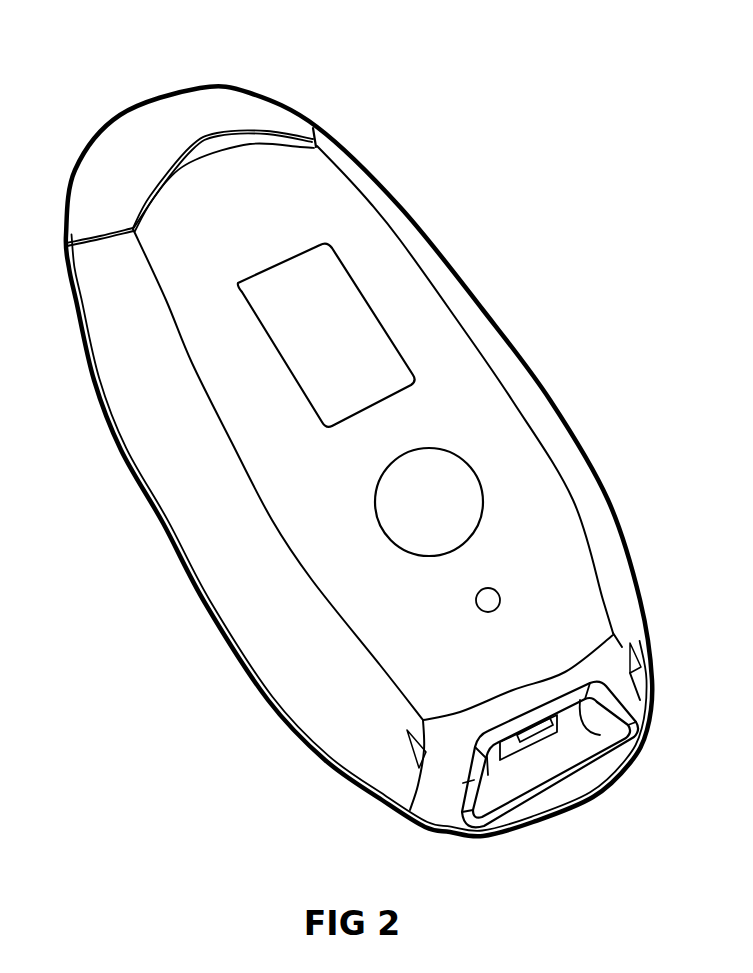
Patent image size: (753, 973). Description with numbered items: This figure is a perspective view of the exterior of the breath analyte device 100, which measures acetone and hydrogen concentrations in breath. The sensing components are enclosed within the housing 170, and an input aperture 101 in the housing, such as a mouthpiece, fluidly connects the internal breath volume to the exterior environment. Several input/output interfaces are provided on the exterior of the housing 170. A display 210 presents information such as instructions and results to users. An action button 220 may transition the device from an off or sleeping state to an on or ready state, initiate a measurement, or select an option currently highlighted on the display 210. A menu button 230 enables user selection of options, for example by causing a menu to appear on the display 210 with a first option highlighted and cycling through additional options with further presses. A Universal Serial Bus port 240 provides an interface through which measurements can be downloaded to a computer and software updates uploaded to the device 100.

The breath analyte device 100 is at (459, 85).
The input aperture 101 is at (180, 108).
The housing 170 is at (162, 522).
The display 210 is at (343, 323).
The action button 220 is at (458, 497).
The menu button 230 is at (488, 600).
The Universal Serial Bus (USB) port 240 is at (520, 730).